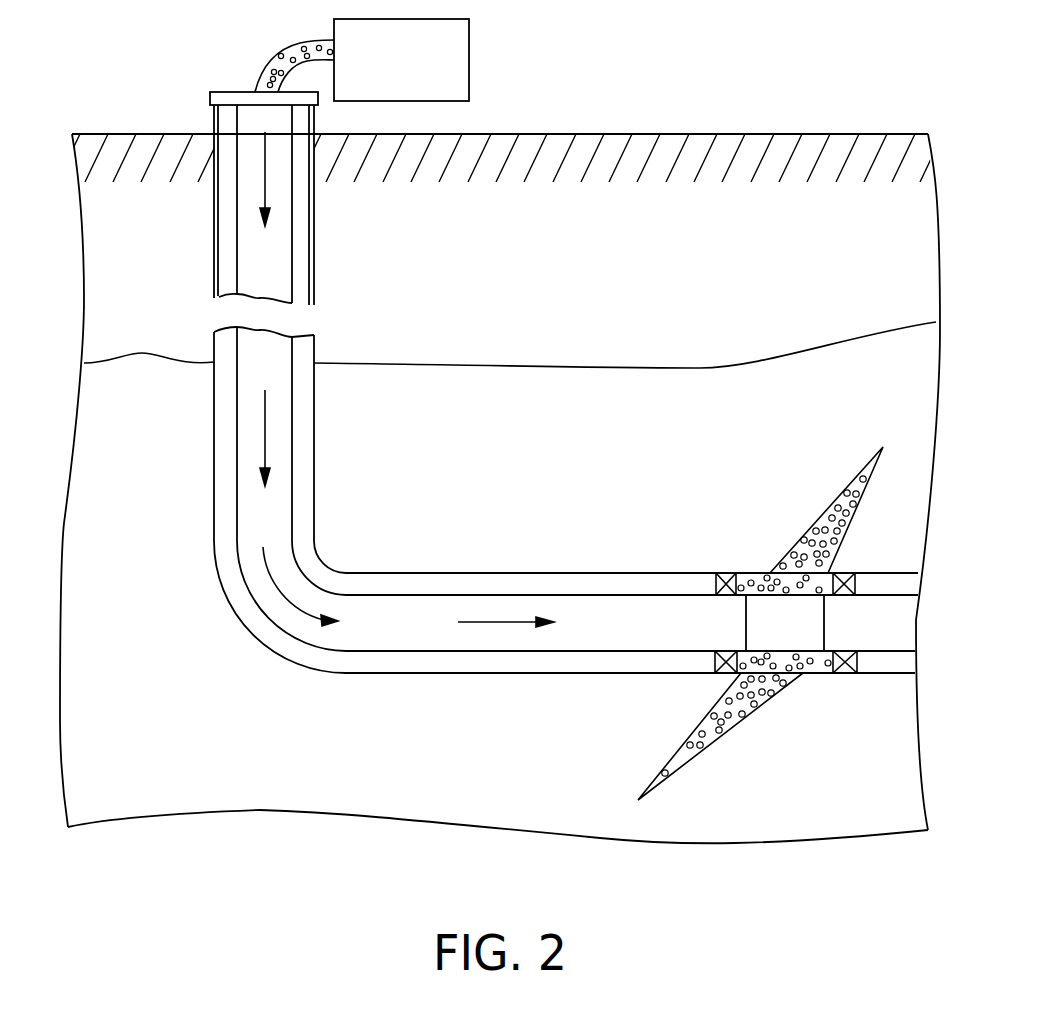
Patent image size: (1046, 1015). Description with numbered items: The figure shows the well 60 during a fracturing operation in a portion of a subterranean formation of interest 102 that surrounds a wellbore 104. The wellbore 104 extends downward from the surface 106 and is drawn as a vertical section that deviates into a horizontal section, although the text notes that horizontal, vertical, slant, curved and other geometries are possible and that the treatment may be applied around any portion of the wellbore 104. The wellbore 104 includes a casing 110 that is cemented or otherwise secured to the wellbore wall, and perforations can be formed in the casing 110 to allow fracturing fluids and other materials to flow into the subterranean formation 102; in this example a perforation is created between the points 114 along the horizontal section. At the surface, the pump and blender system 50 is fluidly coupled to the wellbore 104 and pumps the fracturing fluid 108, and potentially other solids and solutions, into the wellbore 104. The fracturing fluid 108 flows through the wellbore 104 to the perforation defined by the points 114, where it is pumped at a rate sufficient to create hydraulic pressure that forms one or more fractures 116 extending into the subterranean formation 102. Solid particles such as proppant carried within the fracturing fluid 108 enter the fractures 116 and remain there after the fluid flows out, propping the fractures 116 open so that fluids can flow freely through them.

The pump and blender system 50 is at (412, 74).
The well 60 is at (228, 679).
The subterranean formation of interest 102 is at (575, 436).
The wellbore 104 is at (232, 230).
The surface 106 is at (672, 134).
The fracturing fluid 108 is at (270, 65).
The casing 110 is at (219, 275).
The points 114 is at (729, 573).
The fractures 116 is at (795, 518).